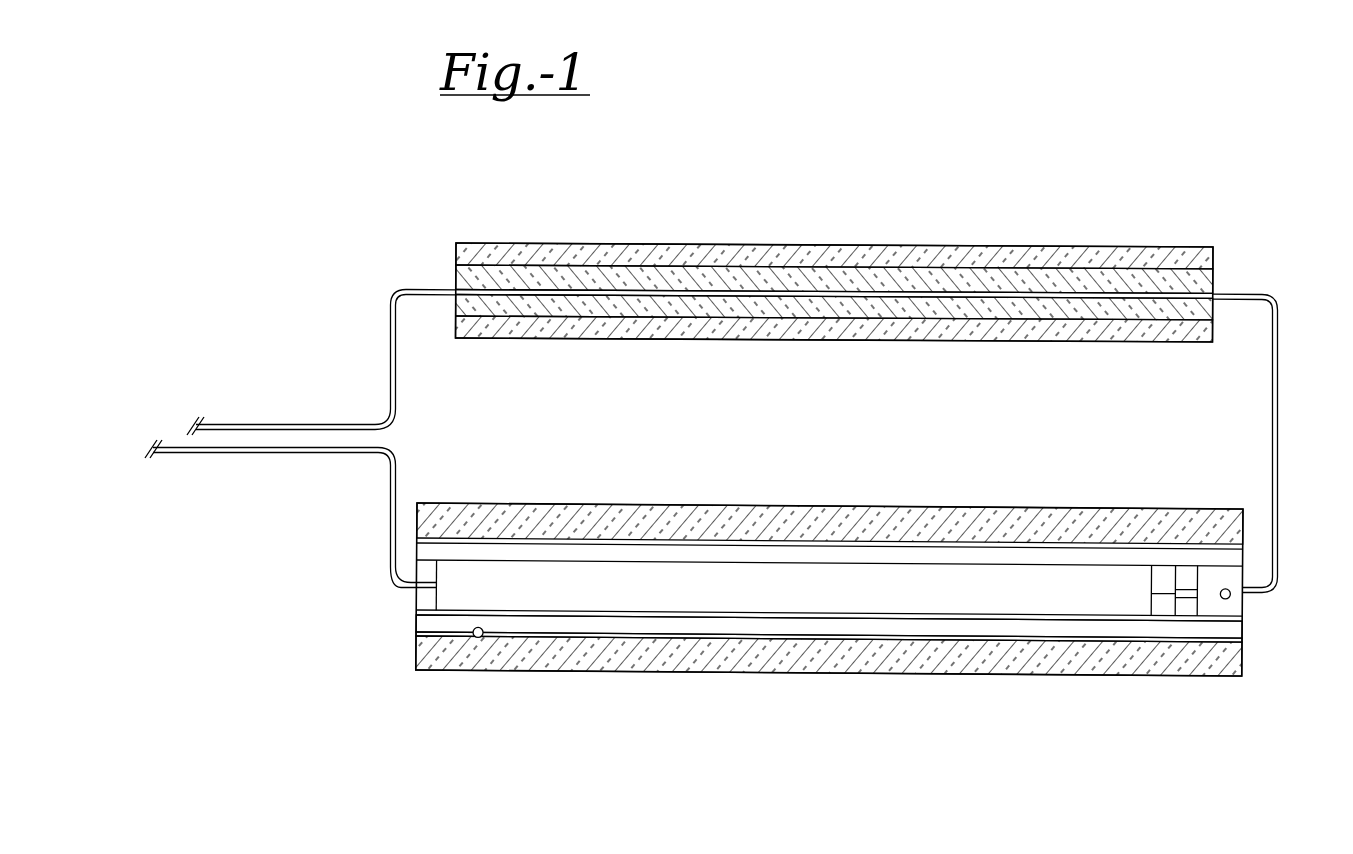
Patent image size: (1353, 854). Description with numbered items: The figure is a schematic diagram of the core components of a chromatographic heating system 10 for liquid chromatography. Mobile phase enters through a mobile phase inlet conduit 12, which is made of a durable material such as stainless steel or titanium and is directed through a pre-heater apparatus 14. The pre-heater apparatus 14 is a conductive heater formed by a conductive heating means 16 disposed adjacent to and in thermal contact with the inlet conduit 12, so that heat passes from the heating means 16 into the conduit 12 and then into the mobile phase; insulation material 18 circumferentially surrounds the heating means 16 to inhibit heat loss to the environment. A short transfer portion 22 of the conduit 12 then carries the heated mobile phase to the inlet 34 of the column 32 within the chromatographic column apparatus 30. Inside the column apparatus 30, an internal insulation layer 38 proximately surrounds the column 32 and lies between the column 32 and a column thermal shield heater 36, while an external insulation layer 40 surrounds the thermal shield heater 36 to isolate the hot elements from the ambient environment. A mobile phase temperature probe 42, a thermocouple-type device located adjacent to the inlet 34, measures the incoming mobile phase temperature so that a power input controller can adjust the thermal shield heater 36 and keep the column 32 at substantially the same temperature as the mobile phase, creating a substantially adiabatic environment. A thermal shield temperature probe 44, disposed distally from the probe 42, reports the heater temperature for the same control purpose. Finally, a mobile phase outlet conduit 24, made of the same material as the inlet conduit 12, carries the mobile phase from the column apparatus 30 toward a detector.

The chromatographic heating system 10 is at (380, 262).
The mobile phase inlet conduit 12 is at (246, 424).
The pre-heater apparatus 14 is at (1083, 243).
The conductive heating means 16 is at (455, 275).
The insulation material 18 is at (455, 250).
The transfer portion 22 is at (1280, 300).
The mobile phase outlet conduit 24 is at (288, 455).
The chromatographic column apparatus 30 is at (415, 620).
The column 32 is at (634, 560).
The inlet 34 is at (1243, 594).
The column thermal shield heater 36 is at (712, 638).
The internal insulation layer 38 is at (822, 632).
The external insulation layer 40 is at (1040, 674).
The mobile phase temperature probe 42 is at (1229, 595).
The thermal shield temperature probe 44 is at (481, 638).